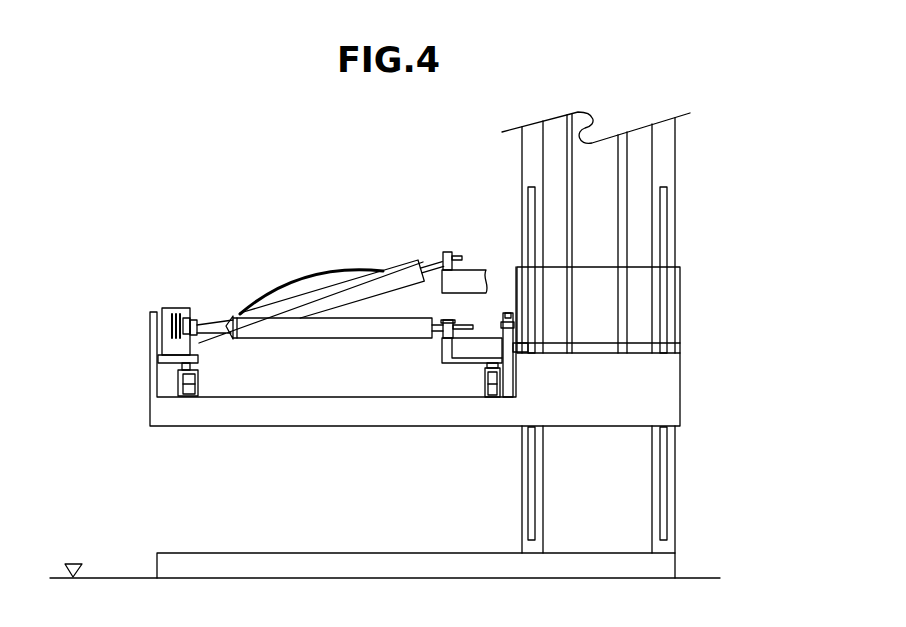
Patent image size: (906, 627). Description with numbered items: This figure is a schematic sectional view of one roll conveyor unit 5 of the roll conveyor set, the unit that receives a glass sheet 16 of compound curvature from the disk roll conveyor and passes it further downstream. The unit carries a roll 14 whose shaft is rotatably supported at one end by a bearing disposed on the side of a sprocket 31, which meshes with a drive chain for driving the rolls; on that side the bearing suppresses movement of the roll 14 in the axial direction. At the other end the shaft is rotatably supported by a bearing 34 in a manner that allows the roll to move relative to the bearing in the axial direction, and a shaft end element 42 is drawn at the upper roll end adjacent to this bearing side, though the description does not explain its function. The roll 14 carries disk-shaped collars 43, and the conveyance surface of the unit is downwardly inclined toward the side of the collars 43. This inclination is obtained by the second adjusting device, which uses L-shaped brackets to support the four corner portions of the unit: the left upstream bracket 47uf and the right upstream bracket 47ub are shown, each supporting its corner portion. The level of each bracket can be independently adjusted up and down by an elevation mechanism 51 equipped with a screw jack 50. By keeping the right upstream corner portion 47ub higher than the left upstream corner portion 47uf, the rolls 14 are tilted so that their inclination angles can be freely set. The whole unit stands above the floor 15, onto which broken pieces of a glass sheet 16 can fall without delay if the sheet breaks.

The first roll conveyor unit 5 is at (335, 245).
The roll 14 is at (405, 327).
The floor 15 is at (108, 577).
The glass sheet 16 is at (303, 278).
The sprocket 31 is at (183, 310).
The bearing 34 is at (445, 322).
The handle 42 is at (441, 262).
The disk-shaped collar 43 is at (233, 317).
The left upstream L-shaped bracket 47uf is at (203, 420).
The right upstream L-shaped bracket 47ub is at (469, 350).
The screw jack 50 is at (617, 267).
The elevation mechanism 51 is at (690, 178).